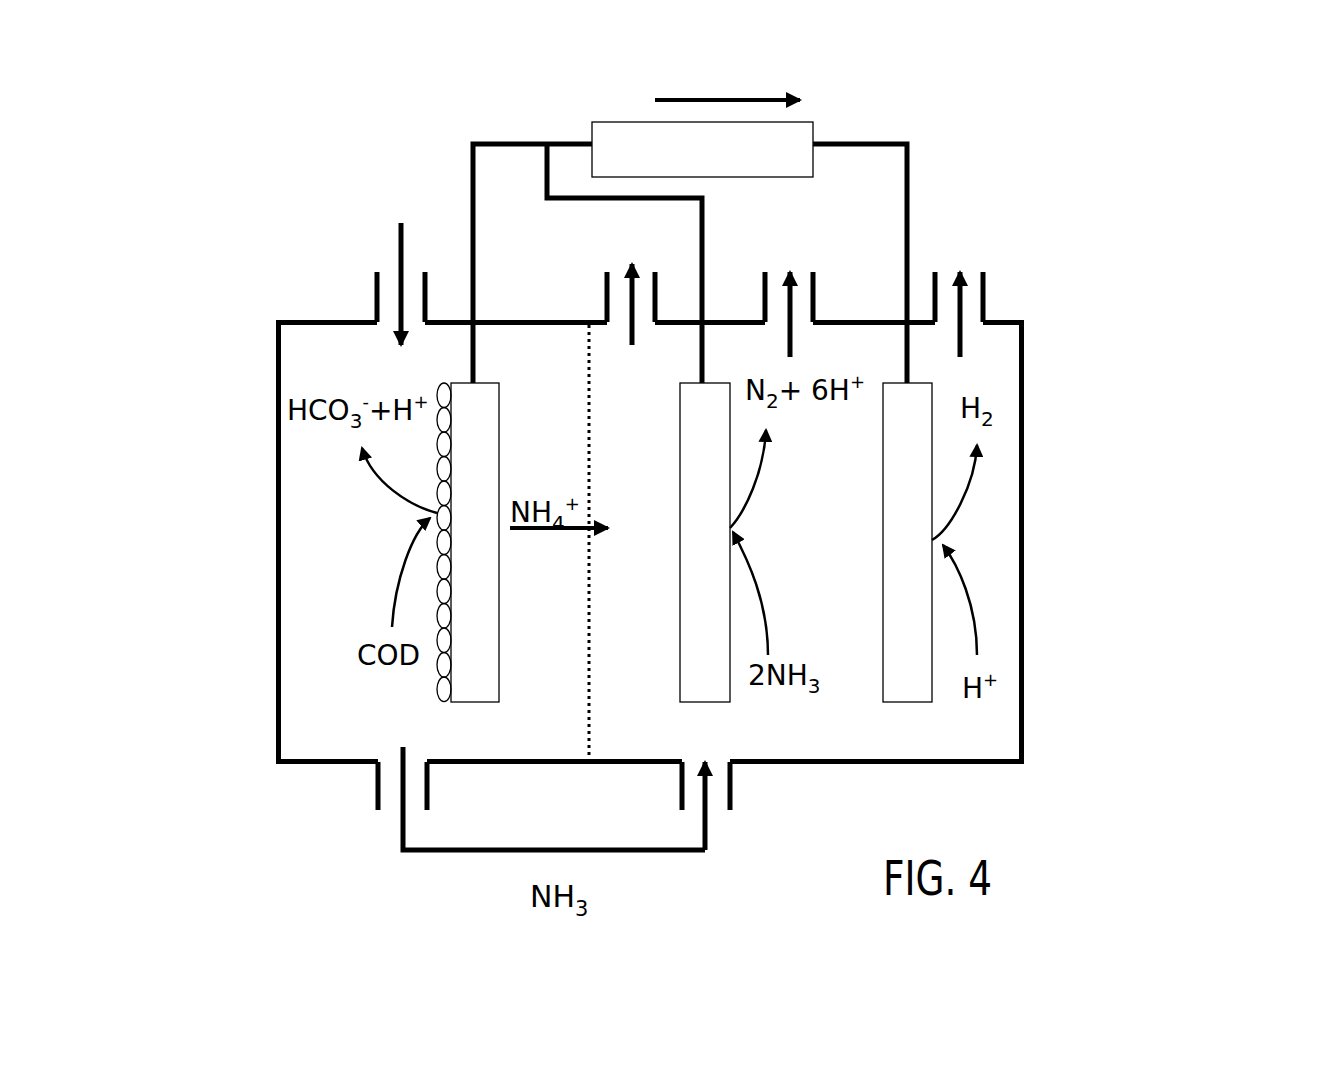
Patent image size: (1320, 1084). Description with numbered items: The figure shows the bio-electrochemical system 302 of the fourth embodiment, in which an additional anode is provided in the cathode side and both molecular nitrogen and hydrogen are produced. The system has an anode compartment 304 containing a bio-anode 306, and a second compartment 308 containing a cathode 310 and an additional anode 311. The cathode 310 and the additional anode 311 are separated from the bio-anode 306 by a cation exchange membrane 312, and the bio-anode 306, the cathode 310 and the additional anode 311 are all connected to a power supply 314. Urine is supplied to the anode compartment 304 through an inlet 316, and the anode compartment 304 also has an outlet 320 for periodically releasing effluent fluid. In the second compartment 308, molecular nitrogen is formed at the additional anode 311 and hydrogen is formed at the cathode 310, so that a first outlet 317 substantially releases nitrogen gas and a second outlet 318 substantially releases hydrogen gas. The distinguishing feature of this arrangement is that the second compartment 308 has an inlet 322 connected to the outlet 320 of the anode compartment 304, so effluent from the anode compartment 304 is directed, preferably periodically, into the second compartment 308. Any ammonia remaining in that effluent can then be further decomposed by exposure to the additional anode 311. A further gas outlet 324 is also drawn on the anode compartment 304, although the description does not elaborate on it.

The bio-electrochemical system 302 is at (1082, 573).
The anode compartment 304 is at (307, 498).
The bio-anode 306 is at (493, 430).
The second compartment 308 is at (1024, 735).
The cathode 310 is at (898, 458).
The additional anode 311 is at (715, 492).
The cation exchange membrane 312 is at (592, 345).
The power supply 314 is at (605, 128).
The inlet 316 is at (390, 280).
The first outlet 317 is at (812, 293).
The second outlet 318 is at (984, 287).
The outlet 320 is at (393, 805).
The inlet 322 is at (720, 805).
The gas outlet 324 is at (622, 292).